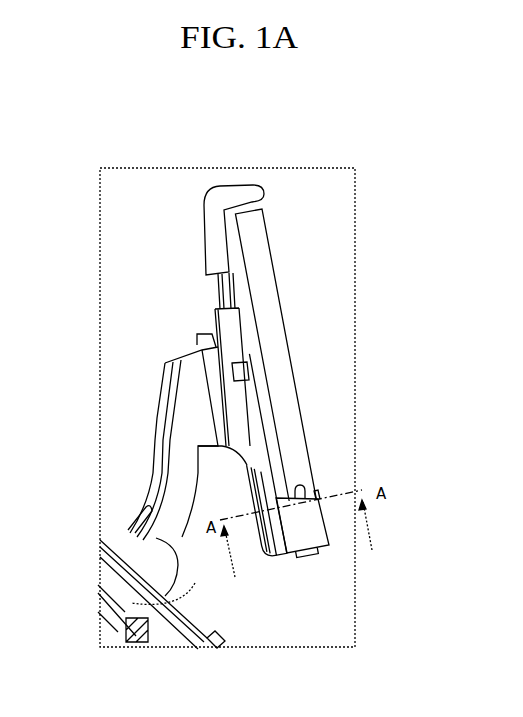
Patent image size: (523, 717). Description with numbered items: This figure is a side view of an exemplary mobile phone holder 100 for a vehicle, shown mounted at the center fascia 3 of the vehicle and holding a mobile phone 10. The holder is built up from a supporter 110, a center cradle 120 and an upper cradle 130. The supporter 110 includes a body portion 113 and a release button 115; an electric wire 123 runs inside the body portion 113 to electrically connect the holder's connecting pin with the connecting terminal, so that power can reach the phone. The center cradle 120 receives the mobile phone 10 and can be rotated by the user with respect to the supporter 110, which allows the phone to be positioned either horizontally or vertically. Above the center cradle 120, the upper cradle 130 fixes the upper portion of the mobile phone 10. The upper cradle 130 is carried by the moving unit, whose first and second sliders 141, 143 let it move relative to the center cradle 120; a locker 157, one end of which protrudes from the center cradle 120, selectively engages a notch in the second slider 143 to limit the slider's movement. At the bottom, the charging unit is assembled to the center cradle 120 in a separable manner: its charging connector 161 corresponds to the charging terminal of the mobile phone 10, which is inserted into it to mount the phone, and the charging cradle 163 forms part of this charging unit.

The mobile phone holder 100 is at (186, 208).
The mobile phone 10 is at (274, 272).
The upper cradle 130 is at (217, 200).
The first slider 141 is at (224, 286).
The second slider 143 is at (228, 291).
The electric wire 123 is at (268, 549).
The locker 157 is at (170, 463).
The center cradle 120 is at (321, 551).
The charging connector 161 is at (301, 485).
The charging cradle 163 is at (319, 497).
The supporter 110 is at (152, 392).
The body portion 113 is at (157, 418).
The release button 115 is at (133, 508).
The center fascia 3 is at (161, 594).